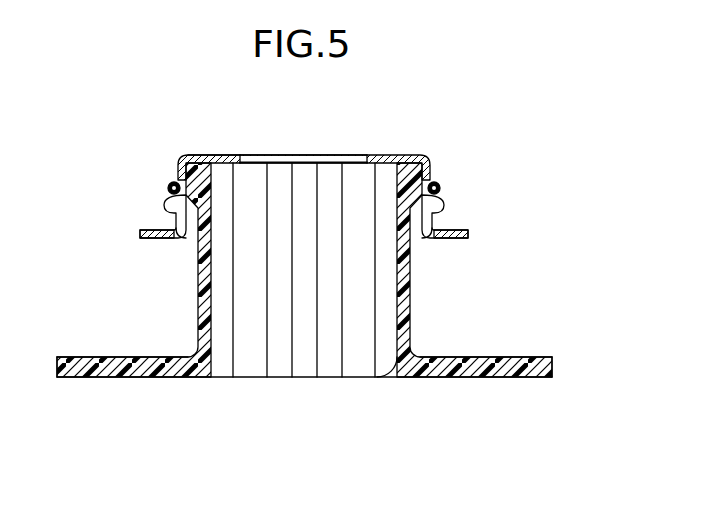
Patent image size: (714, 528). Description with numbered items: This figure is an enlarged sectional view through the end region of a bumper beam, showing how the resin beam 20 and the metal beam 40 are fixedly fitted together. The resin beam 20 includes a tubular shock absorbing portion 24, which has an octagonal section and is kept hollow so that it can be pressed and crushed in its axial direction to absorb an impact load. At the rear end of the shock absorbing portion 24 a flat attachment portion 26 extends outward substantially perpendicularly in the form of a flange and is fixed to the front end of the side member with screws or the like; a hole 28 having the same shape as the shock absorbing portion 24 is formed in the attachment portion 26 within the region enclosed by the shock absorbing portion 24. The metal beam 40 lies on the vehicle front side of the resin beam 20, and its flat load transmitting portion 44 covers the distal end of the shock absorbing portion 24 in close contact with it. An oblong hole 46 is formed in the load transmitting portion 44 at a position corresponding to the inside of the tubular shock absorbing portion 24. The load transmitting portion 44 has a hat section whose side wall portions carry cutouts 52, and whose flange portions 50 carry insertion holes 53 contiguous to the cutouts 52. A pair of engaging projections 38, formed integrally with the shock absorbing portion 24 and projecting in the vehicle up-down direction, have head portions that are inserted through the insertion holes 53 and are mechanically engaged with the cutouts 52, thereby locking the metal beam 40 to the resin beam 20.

The resin beam 20 is at (174, 406).
The shock absorbing portion 24 is at (196, 302).
The attachment portion 26 is at (131, 362).
The hole 28 is at (386, 367).
The engaging projection 38 is at (168, 206).
The metal beam 40 is at (419, 131).
The load transmitting portion 44 is at (223, 160).
The oblong hole 46 is at (354, 163).
The flange portion 50 is at (139, 233).
The cutout 52 is at (172, 190).
The insertion hole 53 is at (172, 237).